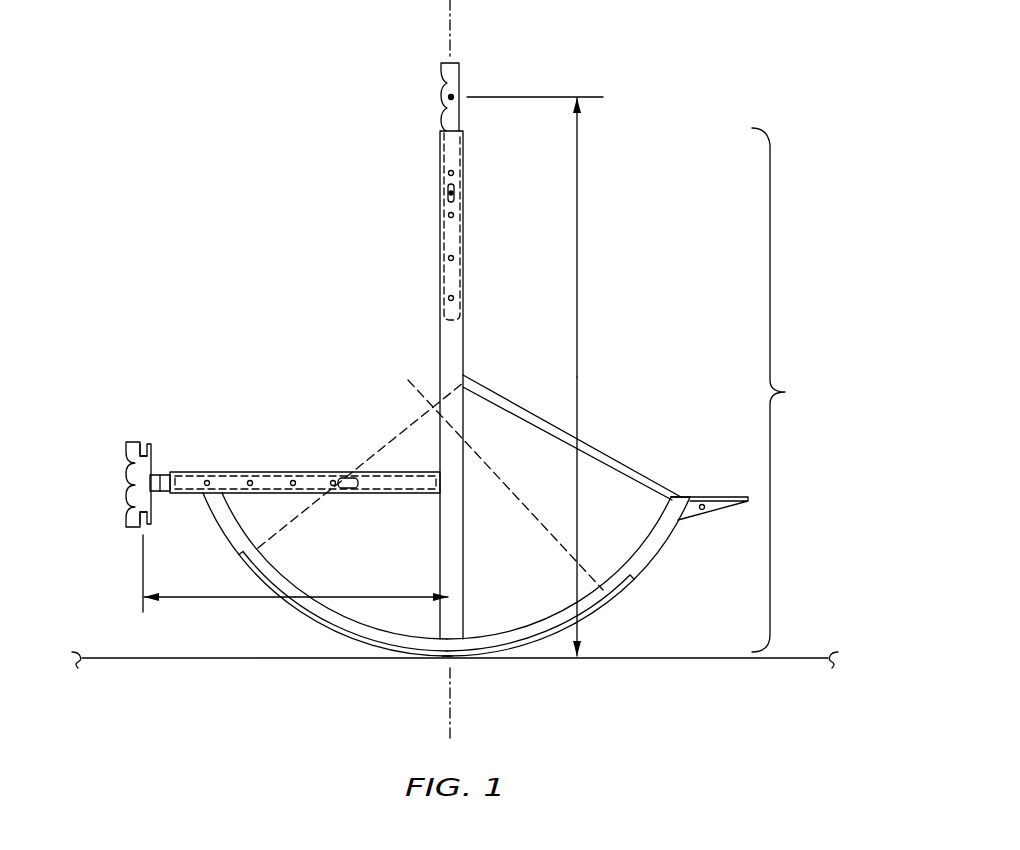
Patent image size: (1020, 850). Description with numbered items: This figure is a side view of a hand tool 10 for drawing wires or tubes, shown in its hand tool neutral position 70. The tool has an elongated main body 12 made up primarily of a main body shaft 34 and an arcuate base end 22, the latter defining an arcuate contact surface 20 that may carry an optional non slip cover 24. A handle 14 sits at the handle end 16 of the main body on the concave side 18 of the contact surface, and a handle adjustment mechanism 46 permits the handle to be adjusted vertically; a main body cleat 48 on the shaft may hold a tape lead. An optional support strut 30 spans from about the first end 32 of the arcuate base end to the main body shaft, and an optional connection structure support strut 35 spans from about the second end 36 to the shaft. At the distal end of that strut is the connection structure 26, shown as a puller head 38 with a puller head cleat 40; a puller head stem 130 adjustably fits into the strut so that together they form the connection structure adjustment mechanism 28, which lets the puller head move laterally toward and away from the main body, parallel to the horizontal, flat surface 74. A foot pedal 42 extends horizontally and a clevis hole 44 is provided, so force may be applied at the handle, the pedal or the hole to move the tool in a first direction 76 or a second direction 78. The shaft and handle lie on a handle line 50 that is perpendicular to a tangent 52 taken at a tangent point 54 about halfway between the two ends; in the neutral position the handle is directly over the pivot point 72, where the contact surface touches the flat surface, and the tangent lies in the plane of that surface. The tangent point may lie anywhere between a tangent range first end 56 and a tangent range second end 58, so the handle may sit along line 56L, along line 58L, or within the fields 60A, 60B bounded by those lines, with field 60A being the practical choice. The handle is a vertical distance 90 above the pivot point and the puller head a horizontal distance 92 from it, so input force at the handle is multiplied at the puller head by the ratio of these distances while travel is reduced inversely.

The hand tool 10 is at (313, 130).
The elongated main body 12 is at (787, 393).
The handle 14 is at (441, 95).
The handle end 16 is at (452, 148).
The concave side 18 is at (556, 233).
The arcuate contact surface 20 is at (446, 596).
The arcuate base end 22 is at (668, 530).
The non slip cover 24 is at (300, 620).
The connection structure 26 is at (176, 483).
The connection structure adjustment mechanism 28 is at (295, 477).
The support strut 30 is at (510, 398).
The first end 32 is at (716, 494).
The main body shaft 34 is at (452, 351).
The connection structure support strut 35 is at (288, 471).
The second end 36 is at (205, 496).
The puller head 38 is at (176, 483).
The puller head cleat 40 is at (137, 520).
The foot pedal 42 is at (712, 495).
The clevis hole 44 is at (704, 509).
The handle adjustment mechanism 46 is at (458, 190).
The main body cleat 48 is at (449, 193).
The handle line 50 is at (455, 706).
The tangent 52 is at (455, 646).
The tangent point 54 is at (404, 677).
The tangent range first end 56 is at (600, 589).
The line 56L is at (505, 485).
The tangent range second end 58 is at (254, 548).
The line 58L is at (284, 526).
The field 60A is at (430, 392).
The field 60B is at (428, 432).
The hand tool neutral position 70 is at (416, 266).
The pivot point 72 is at (450, 660).
The horizontal, flat surface 74 is at (178, 657).
The first direction 76 is at (472, 30).
The second direction 78 is at (428, 30).
The vertical distance 90 is at (578, 297).
The horizontal distance 92 is at (238, 600).
The puller head stem 130 is at (163, 466).